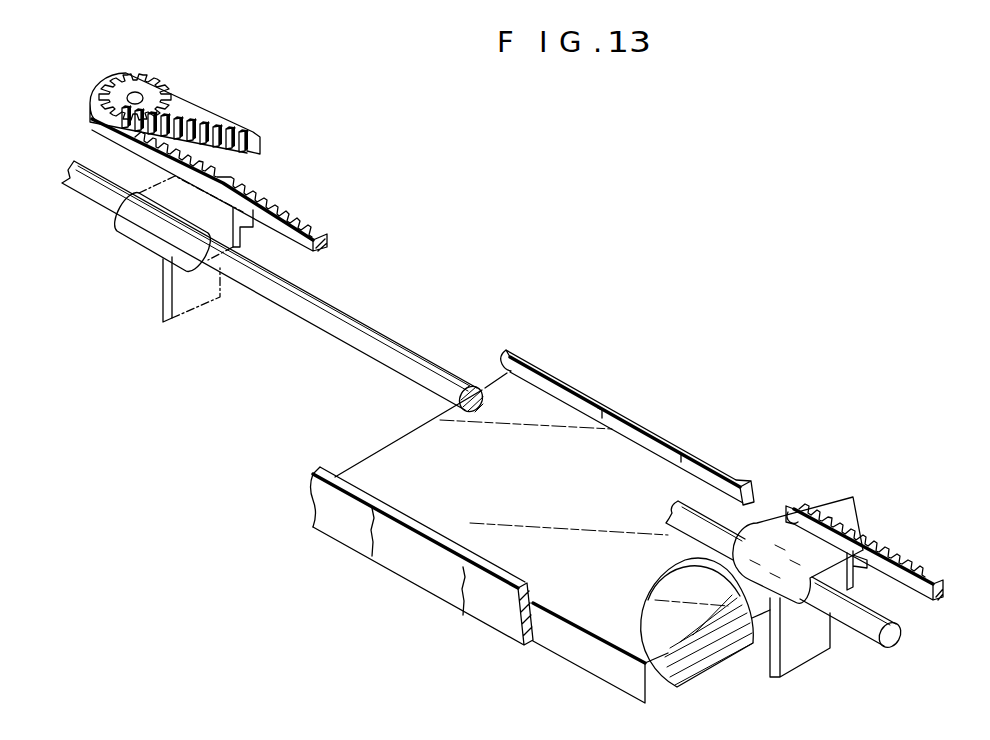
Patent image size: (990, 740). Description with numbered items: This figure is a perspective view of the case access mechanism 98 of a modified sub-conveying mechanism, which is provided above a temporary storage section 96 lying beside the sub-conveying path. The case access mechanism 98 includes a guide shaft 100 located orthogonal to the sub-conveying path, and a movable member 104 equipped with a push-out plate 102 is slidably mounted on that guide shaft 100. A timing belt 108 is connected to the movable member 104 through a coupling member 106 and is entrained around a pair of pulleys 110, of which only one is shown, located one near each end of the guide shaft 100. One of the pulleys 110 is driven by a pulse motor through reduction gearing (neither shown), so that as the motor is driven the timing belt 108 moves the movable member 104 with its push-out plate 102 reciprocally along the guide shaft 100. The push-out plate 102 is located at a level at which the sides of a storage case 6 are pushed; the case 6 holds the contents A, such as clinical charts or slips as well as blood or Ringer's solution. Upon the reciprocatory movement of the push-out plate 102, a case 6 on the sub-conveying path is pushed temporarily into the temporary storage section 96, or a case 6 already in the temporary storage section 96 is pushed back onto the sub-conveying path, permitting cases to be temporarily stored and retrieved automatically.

The storage case 6 is at (567, 650).
The temporary storage section 96 is at (513, 357).
The case access mechanism 98 is at (235, 117).
The guide shaft 100 is at (290, 308).
The push-out plate 102 is at (807, 652).
The movable member 104 is at (815, 557).
The coupling member 106 is at (800, 527).
The timing belt 108 is at (927, 568).
The pulley 110 is at (157, 84).
The contents A is at (703, 645).